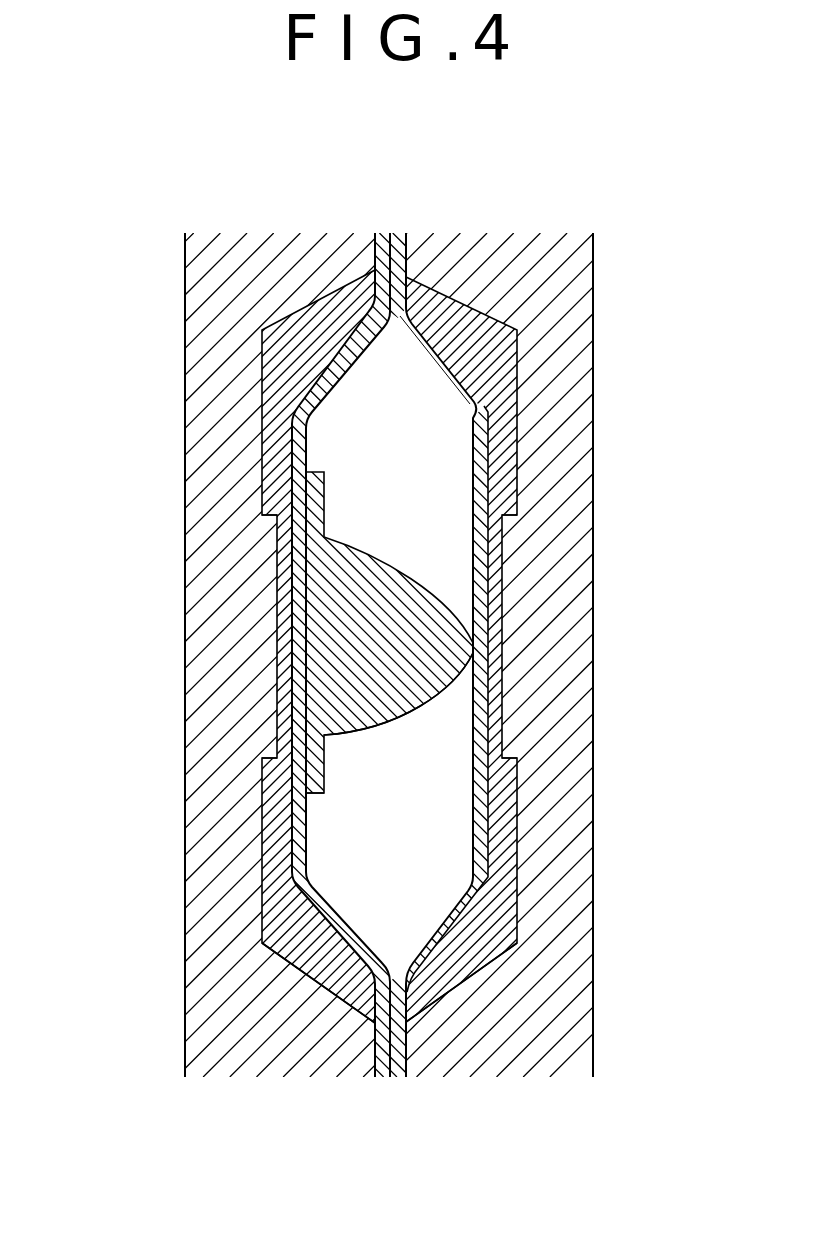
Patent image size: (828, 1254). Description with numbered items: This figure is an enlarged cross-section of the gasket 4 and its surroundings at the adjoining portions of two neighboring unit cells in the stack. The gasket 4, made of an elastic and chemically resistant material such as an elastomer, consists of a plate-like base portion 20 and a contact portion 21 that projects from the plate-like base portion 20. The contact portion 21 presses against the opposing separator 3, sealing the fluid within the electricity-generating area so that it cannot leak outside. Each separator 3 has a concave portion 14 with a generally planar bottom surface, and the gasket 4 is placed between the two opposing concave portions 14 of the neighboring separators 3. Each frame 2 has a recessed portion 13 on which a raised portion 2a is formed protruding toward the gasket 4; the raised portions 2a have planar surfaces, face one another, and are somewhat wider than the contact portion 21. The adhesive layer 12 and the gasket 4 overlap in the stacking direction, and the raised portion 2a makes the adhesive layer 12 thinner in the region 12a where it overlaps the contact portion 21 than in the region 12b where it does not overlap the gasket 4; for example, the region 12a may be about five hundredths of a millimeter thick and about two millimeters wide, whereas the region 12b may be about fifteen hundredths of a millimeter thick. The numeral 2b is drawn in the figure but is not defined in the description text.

The frame 2 is at (207, 622).
The raised portion 2a is at (278, 712).
The step portion 2b is at (274, 762).
The separator 3 is at (306, 410).
The gasket 4 is at (402, 597).
The adhesive layer 12 is at (282, 371).
The region of the adhesive layer 12a is at (282, 550).
The region of the adhesive layer 12b is at (272, 825).
The recessed portion 13 is at (263, 921).
The concave portion 14 is at (306, 826).
The plate-like base portion 20 is at (323, 783).
The contact portion 21 is at (397, 700).